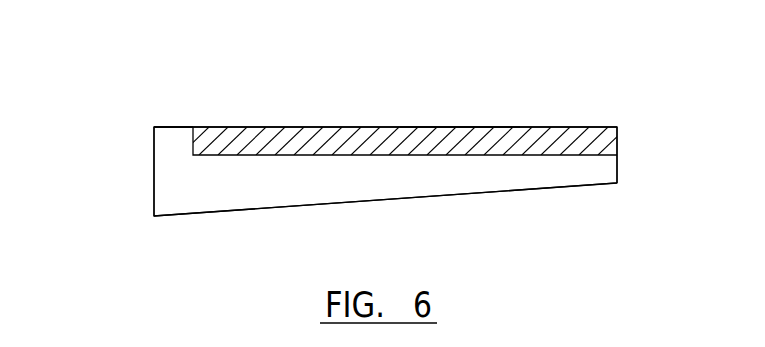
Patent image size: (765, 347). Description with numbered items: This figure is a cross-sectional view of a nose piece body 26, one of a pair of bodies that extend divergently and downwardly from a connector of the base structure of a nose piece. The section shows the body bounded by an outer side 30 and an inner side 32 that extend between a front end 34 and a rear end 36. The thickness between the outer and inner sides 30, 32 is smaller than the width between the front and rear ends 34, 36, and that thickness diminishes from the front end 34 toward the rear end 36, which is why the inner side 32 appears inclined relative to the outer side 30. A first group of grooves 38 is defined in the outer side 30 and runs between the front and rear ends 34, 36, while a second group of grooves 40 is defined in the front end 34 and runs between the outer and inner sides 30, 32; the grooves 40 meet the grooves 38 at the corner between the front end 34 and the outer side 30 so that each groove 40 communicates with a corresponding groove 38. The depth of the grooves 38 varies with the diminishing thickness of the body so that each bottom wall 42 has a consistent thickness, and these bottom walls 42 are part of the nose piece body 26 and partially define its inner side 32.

The nose piece body 26 is at (551, 106).
The outer side 30 is at (244, 213).
The inner side 32 is at (348, 127).
The front end 34 is at (154, 172).
The rear end 36 is at (617, 137).
The first group of grooves 38 is at (568, 178).
The second group of grooves 40 is at (174, 140).
The bottom wall 42 is at (455, 142).